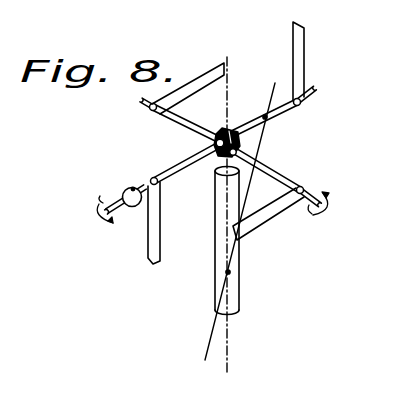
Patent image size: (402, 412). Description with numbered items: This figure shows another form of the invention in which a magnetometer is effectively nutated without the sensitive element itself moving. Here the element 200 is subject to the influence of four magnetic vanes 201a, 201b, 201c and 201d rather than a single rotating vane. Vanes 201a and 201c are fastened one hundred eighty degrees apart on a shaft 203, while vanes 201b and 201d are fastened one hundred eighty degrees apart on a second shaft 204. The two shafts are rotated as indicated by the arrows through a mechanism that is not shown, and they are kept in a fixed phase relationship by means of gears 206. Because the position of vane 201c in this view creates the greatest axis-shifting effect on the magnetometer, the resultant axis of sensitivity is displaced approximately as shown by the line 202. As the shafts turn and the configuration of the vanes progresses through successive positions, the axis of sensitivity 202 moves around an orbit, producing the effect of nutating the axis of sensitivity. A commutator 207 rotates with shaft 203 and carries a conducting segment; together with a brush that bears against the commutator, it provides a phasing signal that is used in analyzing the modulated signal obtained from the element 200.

The element 200 is at (241, 305).
The vane 201a is at (152, 263).
The vane 201b is at (211, 68).
The vane 201c is at (296, 23).
The vane 201d is at (262, 224).
The axis of sensitivity 202 is at (208, 346).
The shaft 203 is at (185, 164).
The shaft 204 is at (165, 117).
The gears 206 is at (228, 133).
The commutator 207 is at (120, 187).